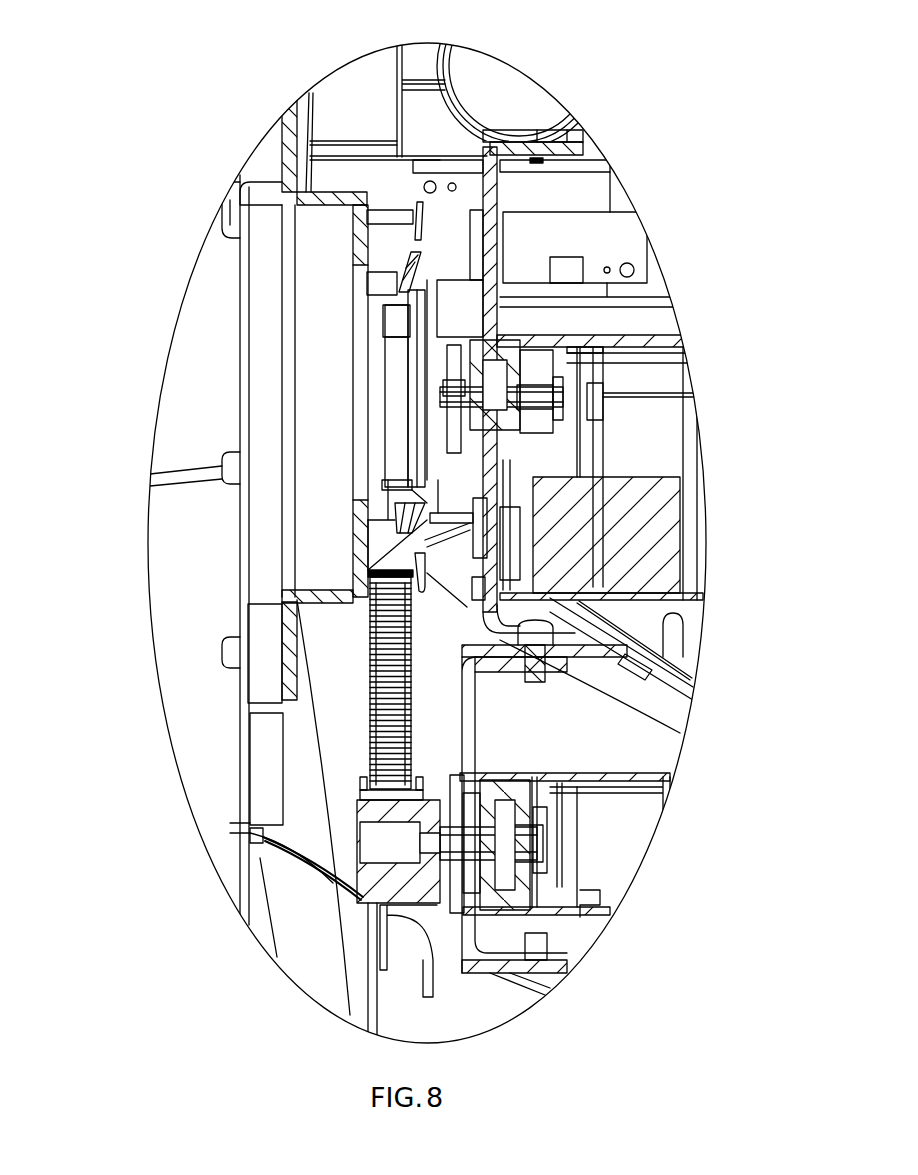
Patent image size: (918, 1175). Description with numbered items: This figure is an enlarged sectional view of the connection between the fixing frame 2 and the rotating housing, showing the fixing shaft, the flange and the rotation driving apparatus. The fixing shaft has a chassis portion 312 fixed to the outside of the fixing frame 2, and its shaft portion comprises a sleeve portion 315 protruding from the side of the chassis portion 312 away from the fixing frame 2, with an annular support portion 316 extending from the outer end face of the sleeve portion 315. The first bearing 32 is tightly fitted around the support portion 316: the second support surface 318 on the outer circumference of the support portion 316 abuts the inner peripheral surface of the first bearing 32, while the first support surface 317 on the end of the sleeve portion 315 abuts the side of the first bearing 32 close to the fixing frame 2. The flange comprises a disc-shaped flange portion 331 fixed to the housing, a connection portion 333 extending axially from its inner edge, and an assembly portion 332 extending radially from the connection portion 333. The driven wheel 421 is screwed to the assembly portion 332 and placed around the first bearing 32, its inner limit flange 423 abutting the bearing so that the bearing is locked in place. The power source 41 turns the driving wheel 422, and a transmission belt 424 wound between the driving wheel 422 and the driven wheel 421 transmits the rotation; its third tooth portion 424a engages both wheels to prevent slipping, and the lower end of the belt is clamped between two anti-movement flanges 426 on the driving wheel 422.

The fixing frame 2 is at (567, 135).
The chassis portion 312 is at (478, 230).
The sleeve portion 315 is at (450, 283).
The support portion 316 is at (450, 280).
The first support surface 317 is at (457, 270).
The second support surface 318 is at (395, 302).
The first bearing 32 is at (410, 286).
The flange portion 331 is at (293, 628).
The assembly portion 332 is at (353, 530).
The connection portion 333 is at (357, 597).
The power source 41 is at (608, 850).
The driven wheel 421 is at (407, 283).
The driving wheel 422 is at (352, 840).
The limit flange 423 is at (376, 270).
The transmission belt 424 is at (380, 688).
The third tooth portion 424a is at (384, 720).
The anti-movement flanges 426 is at (363, 787).